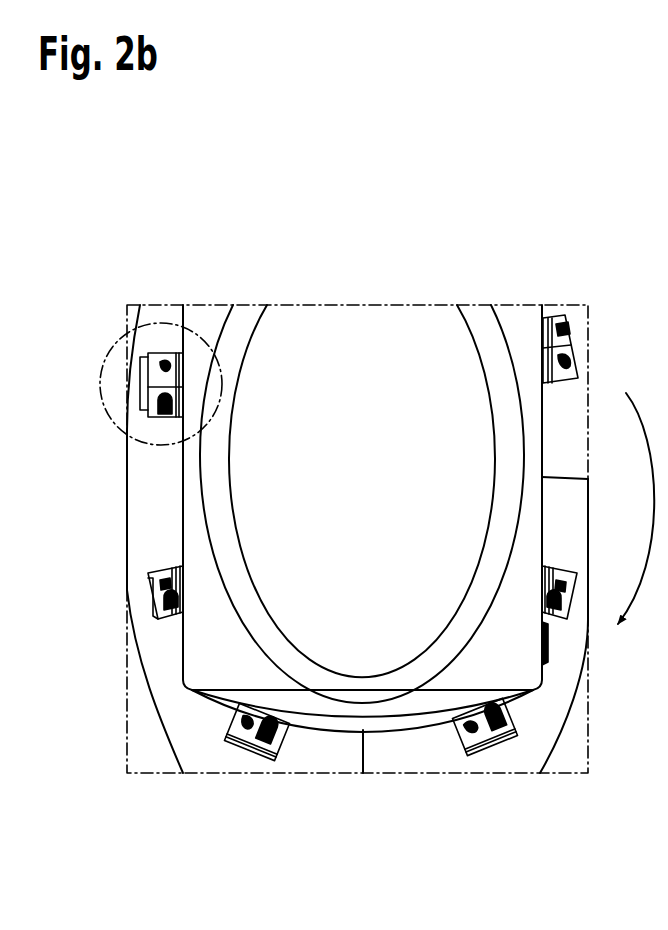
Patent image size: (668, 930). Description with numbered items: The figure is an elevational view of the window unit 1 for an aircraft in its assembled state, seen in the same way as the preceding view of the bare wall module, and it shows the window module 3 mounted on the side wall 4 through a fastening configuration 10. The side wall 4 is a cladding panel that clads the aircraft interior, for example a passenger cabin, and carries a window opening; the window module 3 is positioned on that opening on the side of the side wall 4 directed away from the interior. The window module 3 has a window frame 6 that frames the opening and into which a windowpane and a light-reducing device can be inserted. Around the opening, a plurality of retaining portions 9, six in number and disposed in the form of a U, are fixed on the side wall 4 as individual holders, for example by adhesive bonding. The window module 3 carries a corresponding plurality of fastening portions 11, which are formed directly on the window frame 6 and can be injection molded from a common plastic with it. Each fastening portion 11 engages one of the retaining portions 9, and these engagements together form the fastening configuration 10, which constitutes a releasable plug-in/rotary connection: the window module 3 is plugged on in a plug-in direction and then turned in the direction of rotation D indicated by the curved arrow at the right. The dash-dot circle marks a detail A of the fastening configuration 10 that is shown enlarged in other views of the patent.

The window unit 1 is at (282, 244).
The window module 3 is at (380, 357).
The side wall 4 is at (572, 752).
The window frame 6 is at (518, 323).
The retaining portion 9 is at (156, 612).
The fastening configuration 10 is at (117, 564).
The fastening portion 11 is at (150, 584).
The detail A is at (104, 357).
The direction of rotation D is at (657, 503).